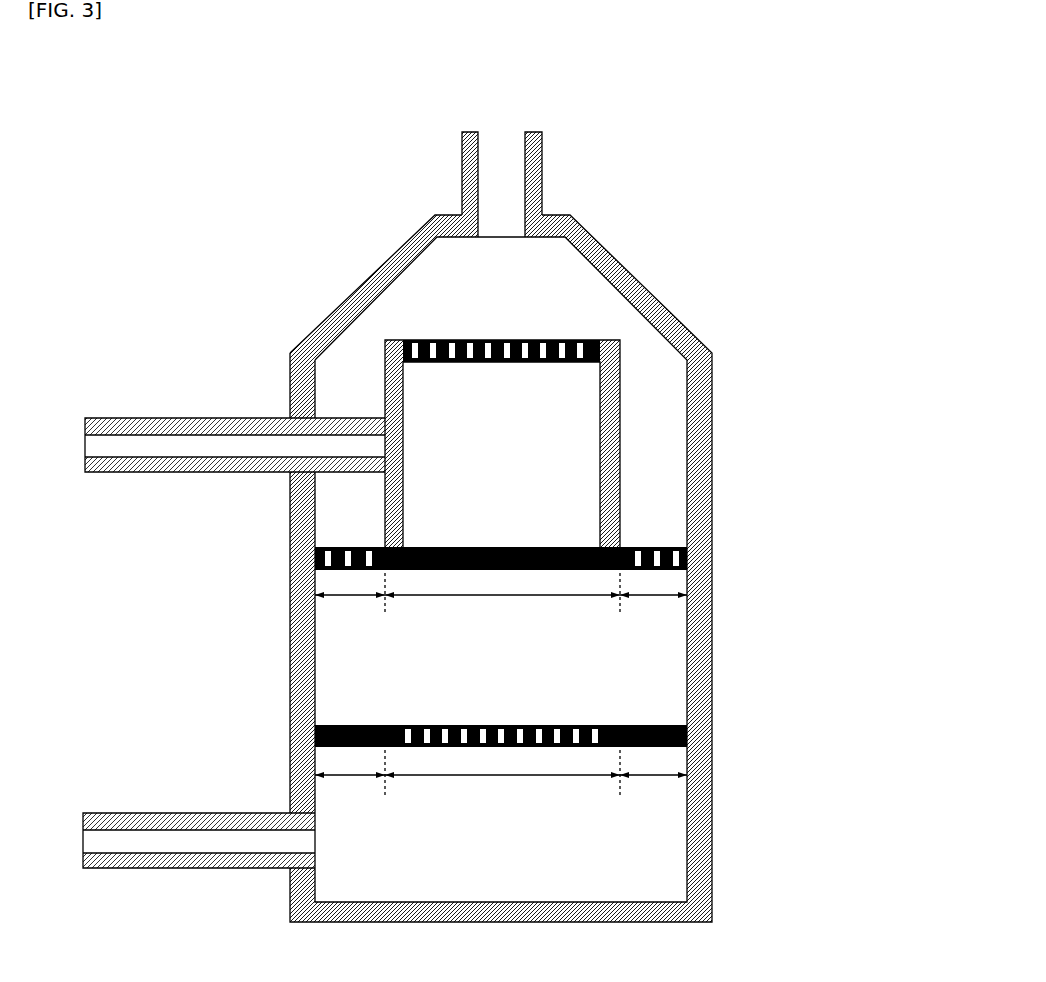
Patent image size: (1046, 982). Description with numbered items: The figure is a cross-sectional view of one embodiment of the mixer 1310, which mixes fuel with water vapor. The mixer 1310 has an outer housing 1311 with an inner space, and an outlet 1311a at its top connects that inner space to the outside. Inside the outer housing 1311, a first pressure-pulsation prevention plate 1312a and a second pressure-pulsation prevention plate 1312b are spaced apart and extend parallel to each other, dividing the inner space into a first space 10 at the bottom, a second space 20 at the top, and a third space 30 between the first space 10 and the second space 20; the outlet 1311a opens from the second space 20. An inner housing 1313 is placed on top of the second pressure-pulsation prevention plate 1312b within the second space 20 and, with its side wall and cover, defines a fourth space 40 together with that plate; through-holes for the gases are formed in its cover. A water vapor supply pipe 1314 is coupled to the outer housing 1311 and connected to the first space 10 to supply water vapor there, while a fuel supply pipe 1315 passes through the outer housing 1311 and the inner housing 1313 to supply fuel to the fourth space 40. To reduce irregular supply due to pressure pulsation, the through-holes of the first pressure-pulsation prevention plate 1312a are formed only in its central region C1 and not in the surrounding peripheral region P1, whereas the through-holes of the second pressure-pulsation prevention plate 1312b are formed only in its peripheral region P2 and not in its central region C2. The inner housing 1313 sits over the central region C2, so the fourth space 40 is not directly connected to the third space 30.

The mixer 1310 is at (617, 172).
The outer housing 1311 is at (712, 495).
The outlet 1311a is at (462, 172).
The first pressure-pulsation prevention plate 1312a is at (640, 747).
The second pressure-pulsation prevention plate 1312b is at (547, 570).
The inner housing 1313 is at (620, 393).
The water vapor supply pipe 1314 is at (163, 813).
The fuel supply pipe 1315 is at (163, 418).
The first space 10 is at (513, 879).
The second space 20 is at (518, 306).
The third space 30 is at (513, 689).
The fourth space 40 is at (527, 482).
The peripheral region P1 is at (501, 782).
The central region C1 is at (502, 793).
The peripheral region P2 is at (501, 602).
The central region C2 is at (502, 611).